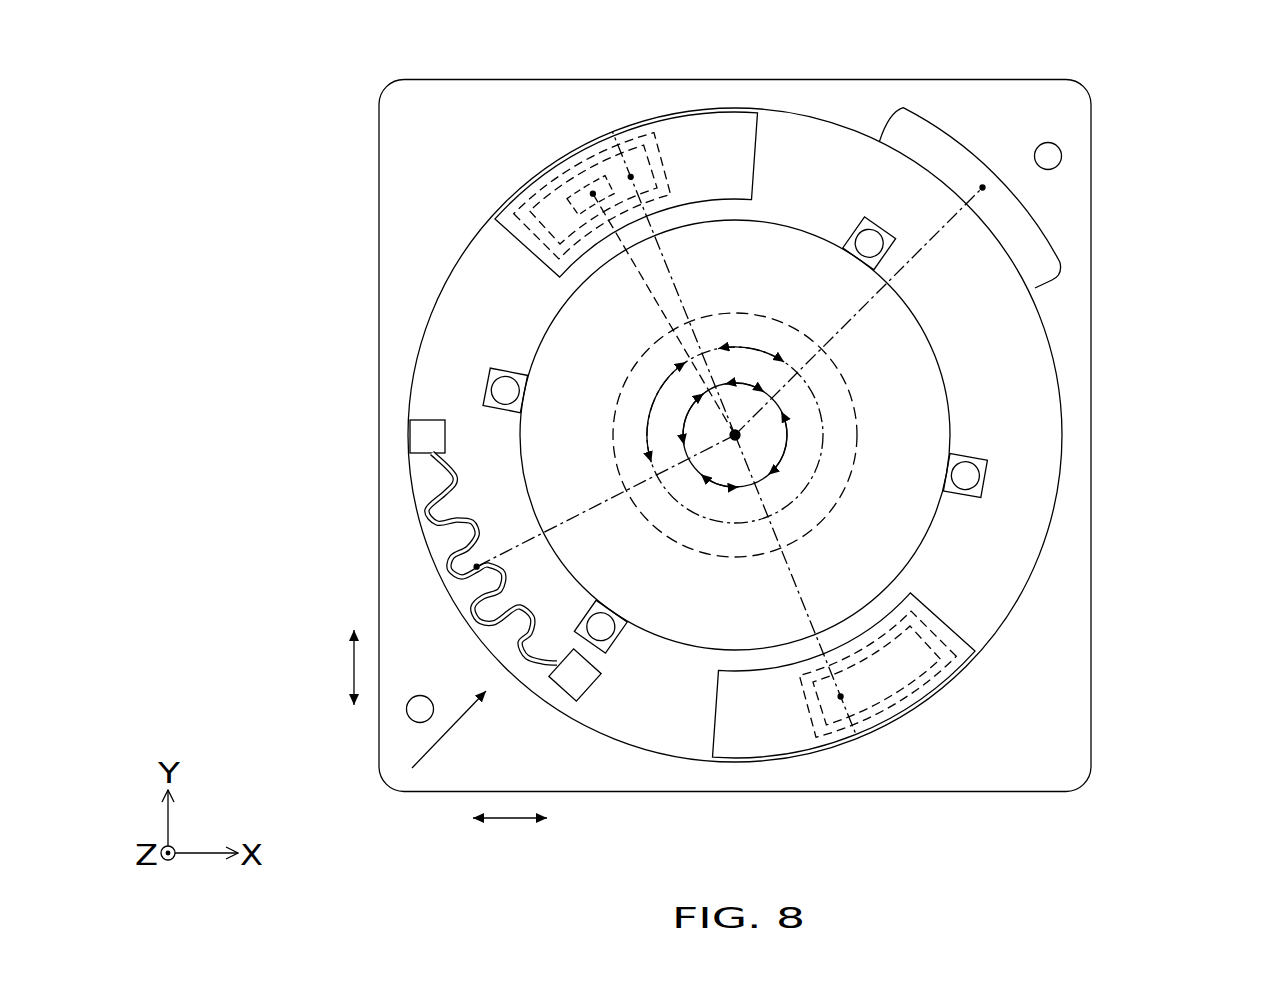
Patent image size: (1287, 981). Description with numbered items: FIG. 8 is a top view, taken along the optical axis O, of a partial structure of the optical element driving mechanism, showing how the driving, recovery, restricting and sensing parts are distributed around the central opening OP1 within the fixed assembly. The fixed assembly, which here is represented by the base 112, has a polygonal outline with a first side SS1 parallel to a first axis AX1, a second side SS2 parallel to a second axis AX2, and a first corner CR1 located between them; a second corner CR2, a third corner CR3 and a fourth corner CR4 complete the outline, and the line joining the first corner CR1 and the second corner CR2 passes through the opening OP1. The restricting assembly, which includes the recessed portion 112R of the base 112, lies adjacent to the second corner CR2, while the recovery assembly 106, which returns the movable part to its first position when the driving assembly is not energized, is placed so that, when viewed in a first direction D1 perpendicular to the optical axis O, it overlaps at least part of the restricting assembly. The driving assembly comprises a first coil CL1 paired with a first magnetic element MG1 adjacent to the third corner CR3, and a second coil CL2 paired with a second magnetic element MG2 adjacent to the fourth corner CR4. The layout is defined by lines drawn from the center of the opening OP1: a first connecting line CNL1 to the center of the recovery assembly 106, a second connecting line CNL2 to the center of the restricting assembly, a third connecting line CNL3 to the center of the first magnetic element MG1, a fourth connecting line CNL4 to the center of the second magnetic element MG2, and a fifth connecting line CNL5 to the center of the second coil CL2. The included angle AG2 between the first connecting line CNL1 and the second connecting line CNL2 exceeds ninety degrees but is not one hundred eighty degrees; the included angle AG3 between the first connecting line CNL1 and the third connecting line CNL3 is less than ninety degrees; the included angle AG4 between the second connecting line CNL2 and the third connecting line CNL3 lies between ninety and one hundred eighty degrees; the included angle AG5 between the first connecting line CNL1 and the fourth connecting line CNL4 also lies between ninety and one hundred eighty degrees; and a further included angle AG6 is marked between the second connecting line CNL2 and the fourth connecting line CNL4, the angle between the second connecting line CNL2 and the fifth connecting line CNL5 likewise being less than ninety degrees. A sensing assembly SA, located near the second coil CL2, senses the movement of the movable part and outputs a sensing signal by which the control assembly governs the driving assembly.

The base 112 is at (1094, 426).
The recessed portion 112R is at (1044, 220).
The recovery assembly 106 is at (419, 517).
The first side SS1 is at (425, 800).
The second side SS2 is at (354, 583).
The first corner CR1 is at (383, 783).
The second corner CR2 is at (1087, 90).
The third corner CR3 is at (1087, 781).
The fourth corner CR4 is at (384, 90).
The opening OP1 is at (857, 430).
The first magnetic element MG1 is at (770, 738).
The second magnetic element MG2 is at (708, 133).
The first coil CL1 is at (890, 704).
The second coil CL2 is at (547, 180).
The sensing assembly SA is at (593, 190).
The first connecting line CNL1 is at (604, 502).
The second connecting line CNL2 is at (860, 310).
The third connecting line CNL3 is at (809, 585).
The fourth connecting line CNL4 is at (680, 283).
The fifth connecting line CNL5 is at (653, 314).
The optical axis O is at (749, 435).
The included angle AG2 is at (687, 403).
The included angle AG3 is at (717, 488).
The included angle AG4 is at (785, 443).
The included angle AG5 is at (647, 434).
The sixth angle AG6 is at (755, 350).
The first direction D1 is at (449, 730).
The first axis AX1 is at (543, 820).
The second axis AX2 is at (318, 667).